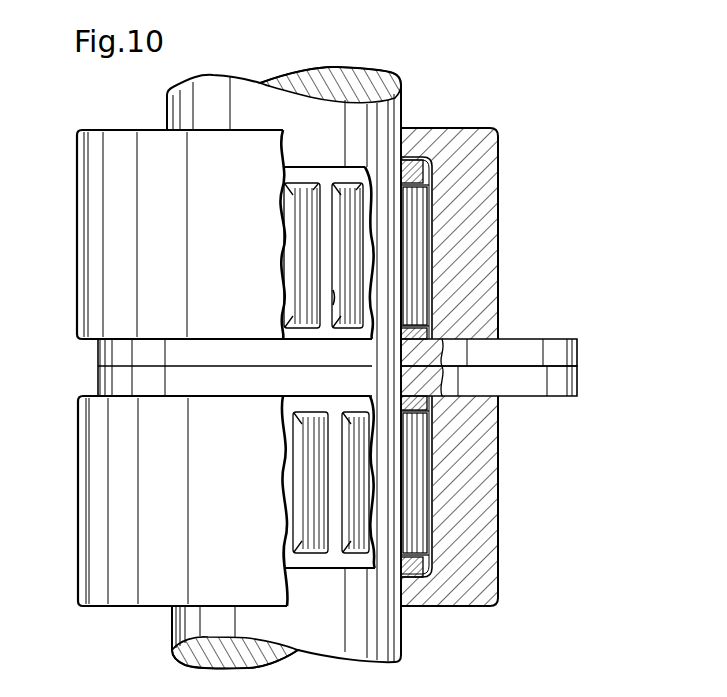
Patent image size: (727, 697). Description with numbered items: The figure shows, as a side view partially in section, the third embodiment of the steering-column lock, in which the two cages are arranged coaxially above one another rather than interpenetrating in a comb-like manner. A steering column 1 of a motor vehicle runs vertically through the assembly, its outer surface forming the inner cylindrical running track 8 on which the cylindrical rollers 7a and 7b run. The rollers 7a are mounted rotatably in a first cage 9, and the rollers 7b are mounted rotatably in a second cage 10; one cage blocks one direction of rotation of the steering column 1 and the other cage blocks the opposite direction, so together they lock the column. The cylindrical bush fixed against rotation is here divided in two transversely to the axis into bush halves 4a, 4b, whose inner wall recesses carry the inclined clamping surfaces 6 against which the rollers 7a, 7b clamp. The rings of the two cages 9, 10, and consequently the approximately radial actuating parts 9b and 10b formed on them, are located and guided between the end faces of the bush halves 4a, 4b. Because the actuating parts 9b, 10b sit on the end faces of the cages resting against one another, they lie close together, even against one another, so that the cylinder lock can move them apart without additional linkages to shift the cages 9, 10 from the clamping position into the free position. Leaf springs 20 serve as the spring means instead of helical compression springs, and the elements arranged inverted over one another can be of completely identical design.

The steering column 1 is at (175, 110).
The bush half 4a is at (88, 204).
The bush half 4b is at (90, 508).
The rollers 7a is at (302, 246).
The rollers 7b is at (310, 464).
The leaf springs 20 is at (333, 297).
The first cage 9 is at (297, 177).
The second cage 10 is at (430, 405).
The running track 8 is at (401, 243).
The clamping surfaces 6 is at (420, 278).
The actuating lever 9b is at (568, 353).
The actuating lever 10b is at (570, 383).